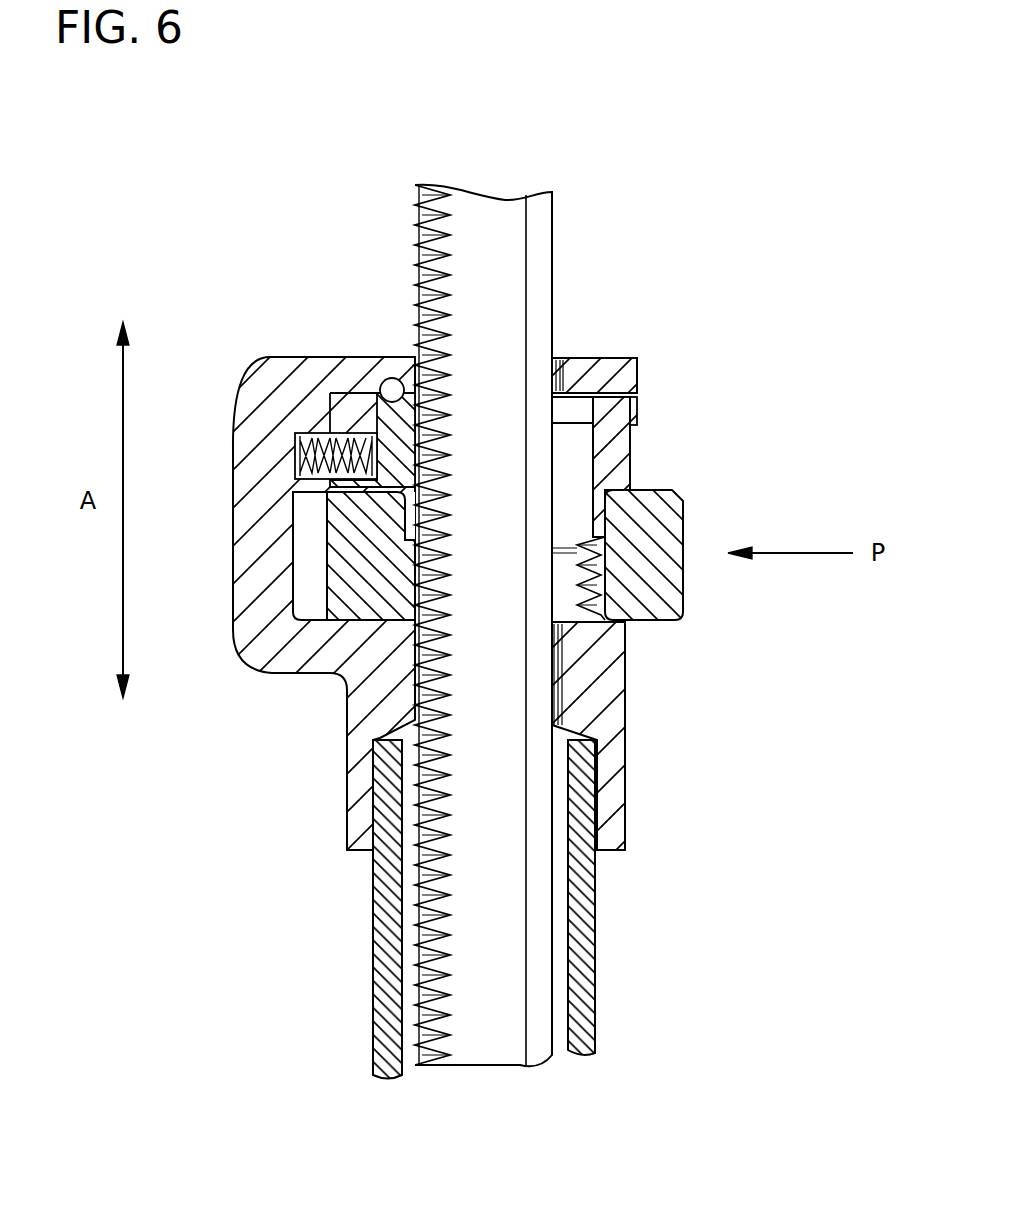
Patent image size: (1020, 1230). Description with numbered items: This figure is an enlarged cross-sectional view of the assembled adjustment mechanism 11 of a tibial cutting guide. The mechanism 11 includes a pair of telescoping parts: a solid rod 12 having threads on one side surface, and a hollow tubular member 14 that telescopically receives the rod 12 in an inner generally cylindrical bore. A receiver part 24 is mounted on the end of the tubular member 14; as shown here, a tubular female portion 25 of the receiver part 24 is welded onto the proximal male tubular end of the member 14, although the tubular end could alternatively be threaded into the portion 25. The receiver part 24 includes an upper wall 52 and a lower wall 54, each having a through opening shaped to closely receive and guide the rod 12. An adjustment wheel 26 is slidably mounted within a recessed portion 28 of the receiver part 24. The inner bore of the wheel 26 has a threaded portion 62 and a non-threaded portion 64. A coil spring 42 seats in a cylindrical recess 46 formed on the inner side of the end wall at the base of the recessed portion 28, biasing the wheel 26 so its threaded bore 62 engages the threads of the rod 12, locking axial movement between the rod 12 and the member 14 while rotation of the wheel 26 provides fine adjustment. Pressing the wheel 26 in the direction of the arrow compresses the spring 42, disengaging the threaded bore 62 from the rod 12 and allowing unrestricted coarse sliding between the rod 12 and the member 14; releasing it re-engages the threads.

The adjustment mechanism 11 is at (250, 665).
The rod 12 is at (480, 1032).
The hollow tubular member 14 is at (592, 983).
The receiver part 24 is at (297, 666).
The tubular female portion 25 is at (627, 827).
The adjustment wheel 26 is at (681, 525).
The recessed portion 28 is at (308, 548).
The coil spring 42 is at (323, 482).
The cylindrical recess 46 is at (294, 443).
The upper wall 52 is at (618, 358).
The lower wall 54 is at (615, 670).
The threaded inner bore portion 62 is at (558, 620).
The non-threaded portion 64 is at (597, 493).